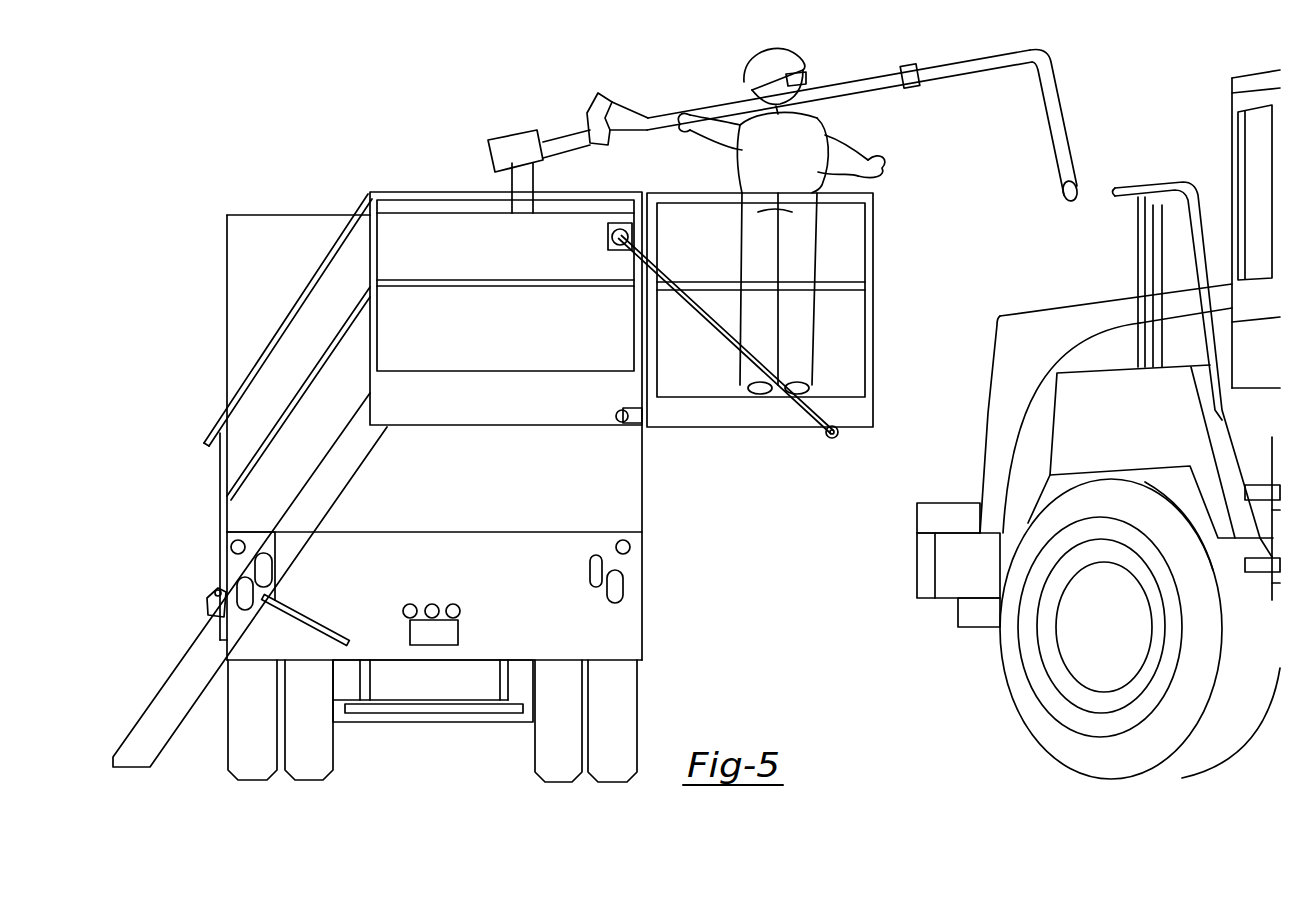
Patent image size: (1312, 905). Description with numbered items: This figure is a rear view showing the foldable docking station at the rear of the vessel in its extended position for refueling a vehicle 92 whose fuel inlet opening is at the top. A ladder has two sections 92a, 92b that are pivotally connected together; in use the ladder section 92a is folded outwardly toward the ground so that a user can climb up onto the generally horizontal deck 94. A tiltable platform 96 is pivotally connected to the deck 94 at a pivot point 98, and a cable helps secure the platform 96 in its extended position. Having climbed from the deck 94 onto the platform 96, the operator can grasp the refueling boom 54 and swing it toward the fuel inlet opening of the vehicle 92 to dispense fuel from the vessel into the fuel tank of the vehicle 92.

The refueling boom 54 is at (1052, 137).
The vehicle 92 is at (1065, 272).
The ladder section 92a is at (188, 672).
The ladder section 92b is at (330, 470).
The deck 94 is at (563, 407).
The tiltable platform 96 is at (857, 412).
The pivot point 98 is at (627, 407).